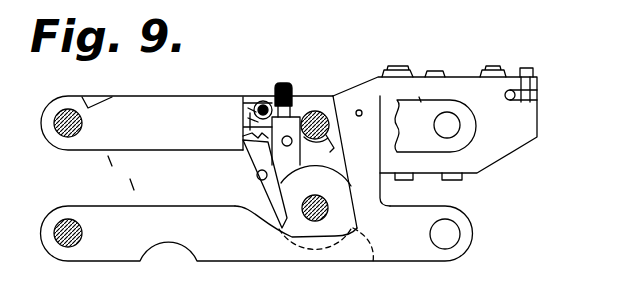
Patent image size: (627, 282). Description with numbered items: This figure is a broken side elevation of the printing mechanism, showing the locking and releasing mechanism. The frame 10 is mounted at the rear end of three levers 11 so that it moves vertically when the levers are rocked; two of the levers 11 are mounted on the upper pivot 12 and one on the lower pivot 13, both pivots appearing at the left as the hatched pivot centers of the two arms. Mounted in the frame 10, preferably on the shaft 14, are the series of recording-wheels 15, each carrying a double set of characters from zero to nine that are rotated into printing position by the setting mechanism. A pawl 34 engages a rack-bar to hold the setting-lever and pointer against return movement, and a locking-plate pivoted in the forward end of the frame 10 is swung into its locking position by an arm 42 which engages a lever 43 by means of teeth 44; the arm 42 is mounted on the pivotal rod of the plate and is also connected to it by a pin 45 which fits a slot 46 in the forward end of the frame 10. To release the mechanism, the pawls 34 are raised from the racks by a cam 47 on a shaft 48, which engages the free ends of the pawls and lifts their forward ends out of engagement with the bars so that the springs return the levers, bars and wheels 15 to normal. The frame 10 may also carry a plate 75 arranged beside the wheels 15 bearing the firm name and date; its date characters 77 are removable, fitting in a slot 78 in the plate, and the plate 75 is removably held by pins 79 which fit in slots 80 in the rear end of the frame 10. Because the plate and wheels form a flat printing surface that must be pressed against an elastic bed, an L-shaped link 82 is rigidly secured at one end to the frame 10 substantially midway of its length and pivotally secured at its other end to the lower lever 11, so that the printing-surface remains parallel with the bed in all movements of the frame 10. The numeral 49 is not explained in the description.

The frame 10 is at (537, 139).
The levers 11 is at (270, 136).
The upper pivot 12 is at (54, 123).
The lower pivot 13 is at (55, 233).
The shaft 14 is at (447, 125).
The recording-wheels 15 is at (441, 72).
The pawl 34 is at (317, 125).
The arm 42 is at (242, 120).
The lever 43 is at (252, 160).
The teeth 44 is at (243, 138).
The pin 45 is at (248, 113).
The slot 46 is at (248, 121).
The cam 47 is at (293, 106).
The shaft 48 is at (285, 88).
The shaft 49 is at (316, 202).
The plate 75 is at (492, 76).
The date characters 77 is at (526, 72).
The slot 78 is at (532, 77).
The pins 79 is at (512, 101).
The slots 80 is at (537, 95).
The L-shaped link 82 is at (380, 165).